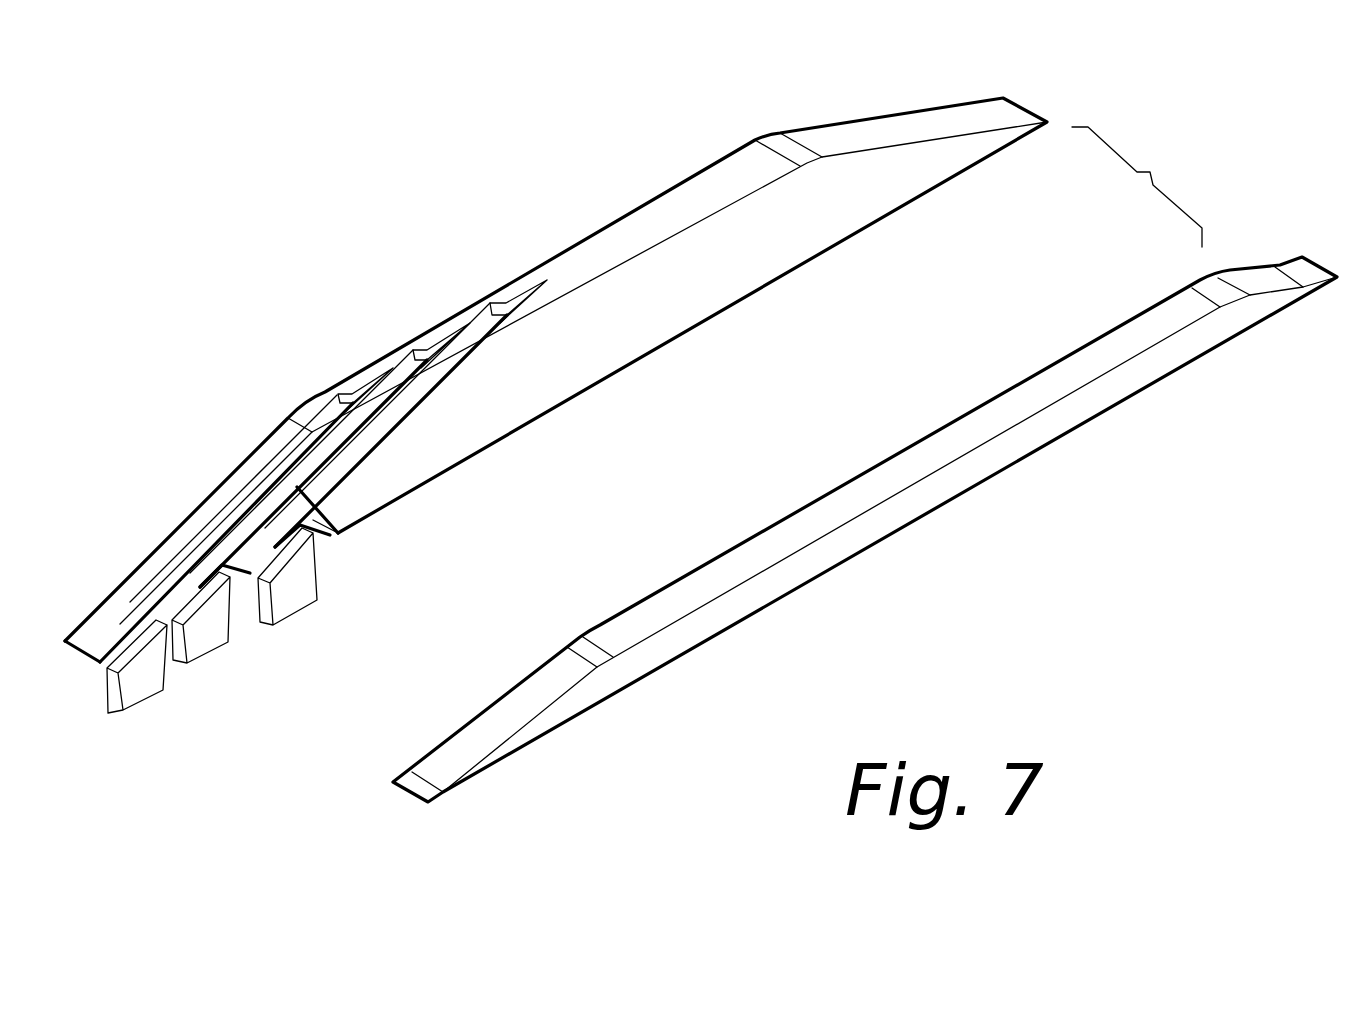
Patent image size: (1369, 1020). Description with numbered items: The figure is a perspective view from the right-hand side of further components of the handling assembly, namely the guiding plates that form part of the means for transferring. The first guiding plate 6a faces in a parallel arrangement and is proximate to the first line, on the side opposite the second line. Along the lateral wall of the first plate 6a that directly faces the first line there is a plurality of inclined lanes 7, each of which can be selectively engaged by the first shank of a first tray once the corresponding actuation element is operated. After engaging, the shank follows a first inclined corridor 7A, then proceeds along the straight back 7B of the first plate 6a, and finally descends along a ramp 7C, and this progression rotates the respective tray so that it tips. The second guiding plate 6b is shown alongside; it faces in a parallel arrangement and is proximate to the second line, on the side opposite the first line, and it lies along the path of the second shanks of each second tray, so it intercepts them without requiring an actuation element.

The first guiding plate 6a is at (613, 214).
The second guiding plate 6b is at (1010, 468).
The inclined lane 7 is at (437, 423).
The first inclined corridor 7A is at (482, 360).
The straight back 7B is at (673, 220).
The ramp 7C is at (880, 133).